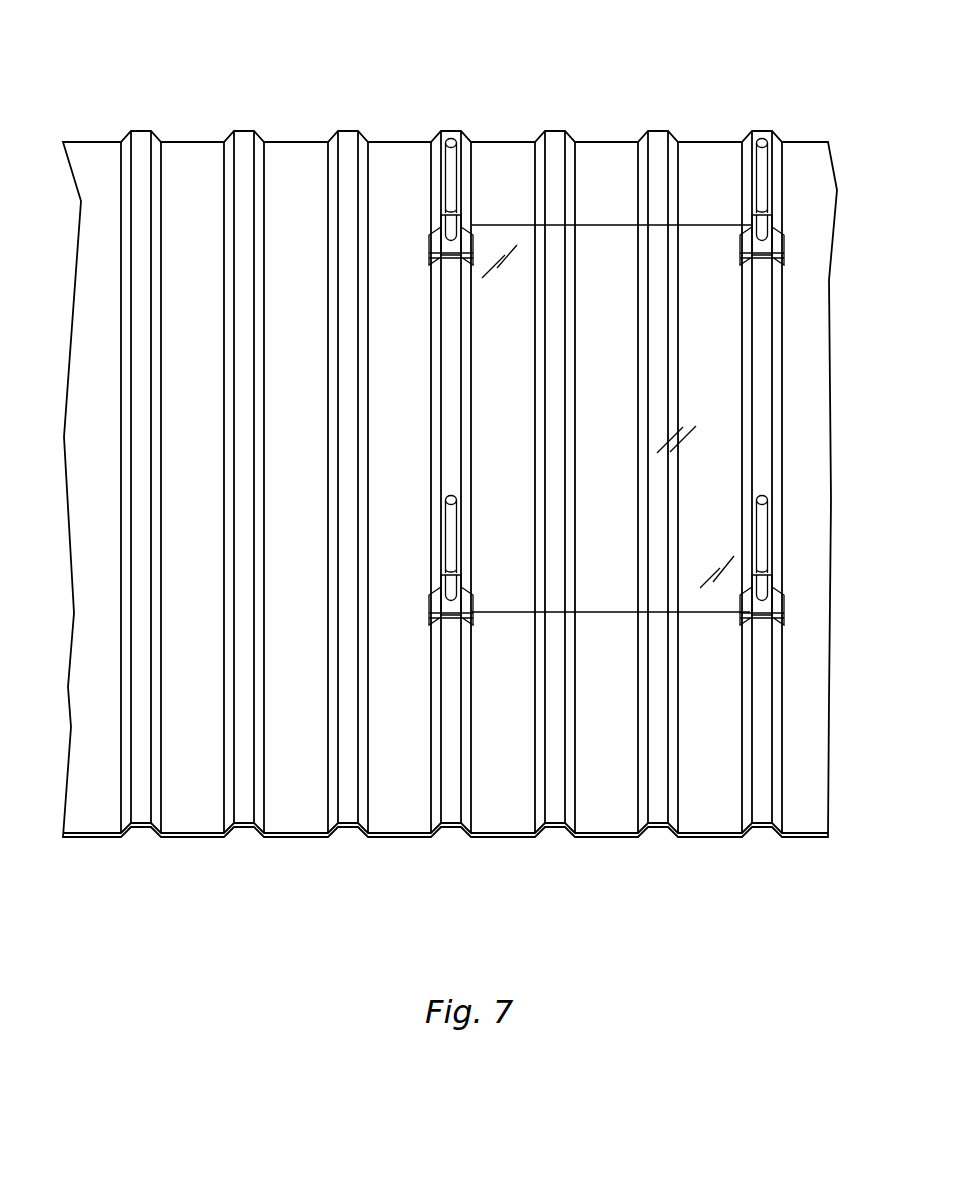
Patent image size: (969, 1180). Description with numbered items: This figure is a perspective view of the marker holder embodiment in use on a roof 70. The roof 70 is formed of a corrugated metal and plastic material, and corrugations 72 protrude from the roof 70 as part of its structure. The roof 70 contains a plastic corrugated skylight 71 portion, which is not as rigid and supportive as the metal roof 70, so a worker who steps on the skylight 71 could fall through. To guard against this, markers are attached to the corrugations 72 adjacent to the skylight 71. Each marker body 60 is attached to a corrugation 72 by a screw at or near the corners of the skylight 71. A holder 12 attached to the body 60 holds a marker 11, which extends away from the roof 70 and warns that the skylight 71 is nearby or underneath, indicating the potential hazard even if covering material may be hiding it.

The roof 70 is at (185, 178).
The corrugations 72 is at (242, 170).
The corrugated skylight 71 is at (607, 258).
The marker body 60 is at (435, 247).
The holder 12 is at (448, 224).
The marker 11 is at (447, 163).